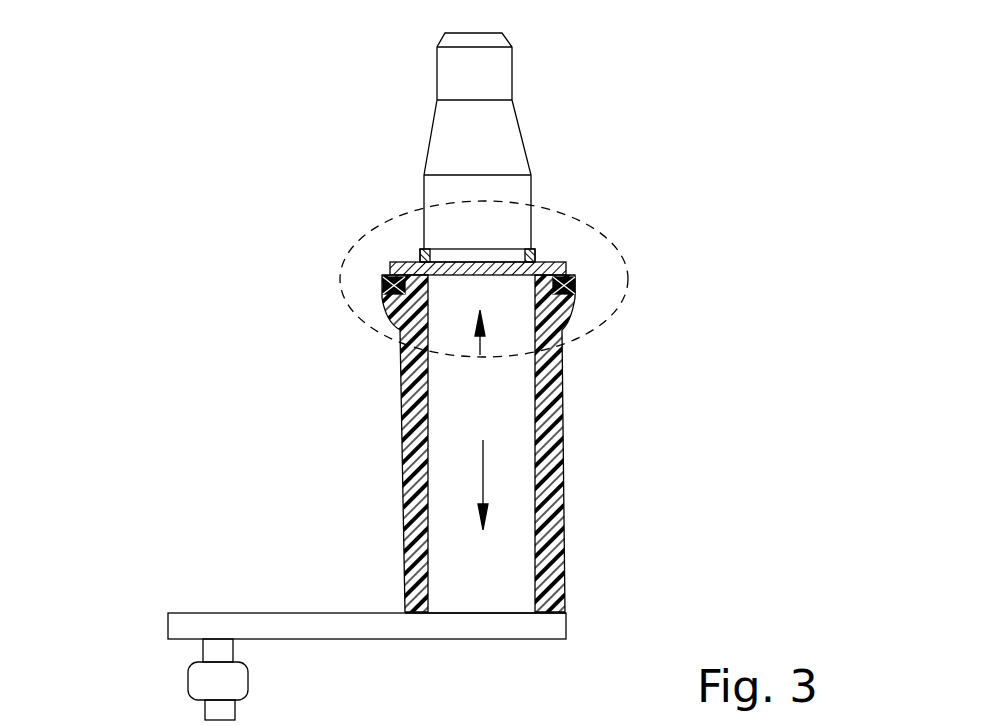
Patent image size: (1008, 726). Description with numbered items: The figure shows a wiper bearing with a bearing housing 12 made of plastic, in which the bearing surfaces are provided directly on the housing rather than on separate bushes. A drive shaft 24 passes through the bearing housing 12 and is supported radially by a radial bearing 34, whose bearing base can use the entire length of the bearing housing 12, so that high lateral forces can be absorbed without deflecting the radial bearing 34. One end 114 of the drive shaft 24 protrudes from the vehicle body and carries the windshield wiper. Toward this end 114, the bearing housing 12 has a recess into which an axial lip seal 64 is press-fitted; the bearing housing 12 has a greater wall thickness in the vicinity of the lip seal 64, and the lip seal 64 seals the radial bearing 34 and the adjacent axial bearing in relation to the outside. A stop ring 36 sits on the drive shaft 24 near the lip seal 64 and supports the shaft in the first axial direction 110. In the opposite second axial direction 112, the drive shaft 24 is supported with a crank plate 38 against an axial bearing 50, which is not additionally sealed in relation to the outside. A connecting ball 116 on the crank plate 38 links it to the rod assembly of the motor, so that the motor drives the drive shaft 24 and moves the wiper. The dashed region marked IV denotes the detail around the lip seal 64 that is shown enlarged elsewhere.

The detail IV is at (390, 222).
The end of the drive shaft 114 is at (544, 83).
The drive shaft 24 is at (503, 150).
The stop ring 36 is at (566, 265).
The lip seal 64 is at (572, 287).
The bearing housing 12 is at (550, 417).
The radial bearing 34 is at (430, 498).
The second axial direction 112 is at (480, 355).
The first axial direction 110 is at (483, 470).
The crank plate 38 is at (370, 622).
The axial bearing 50 is at (565, 607).
The connecting ball 116 is at (205, 685).